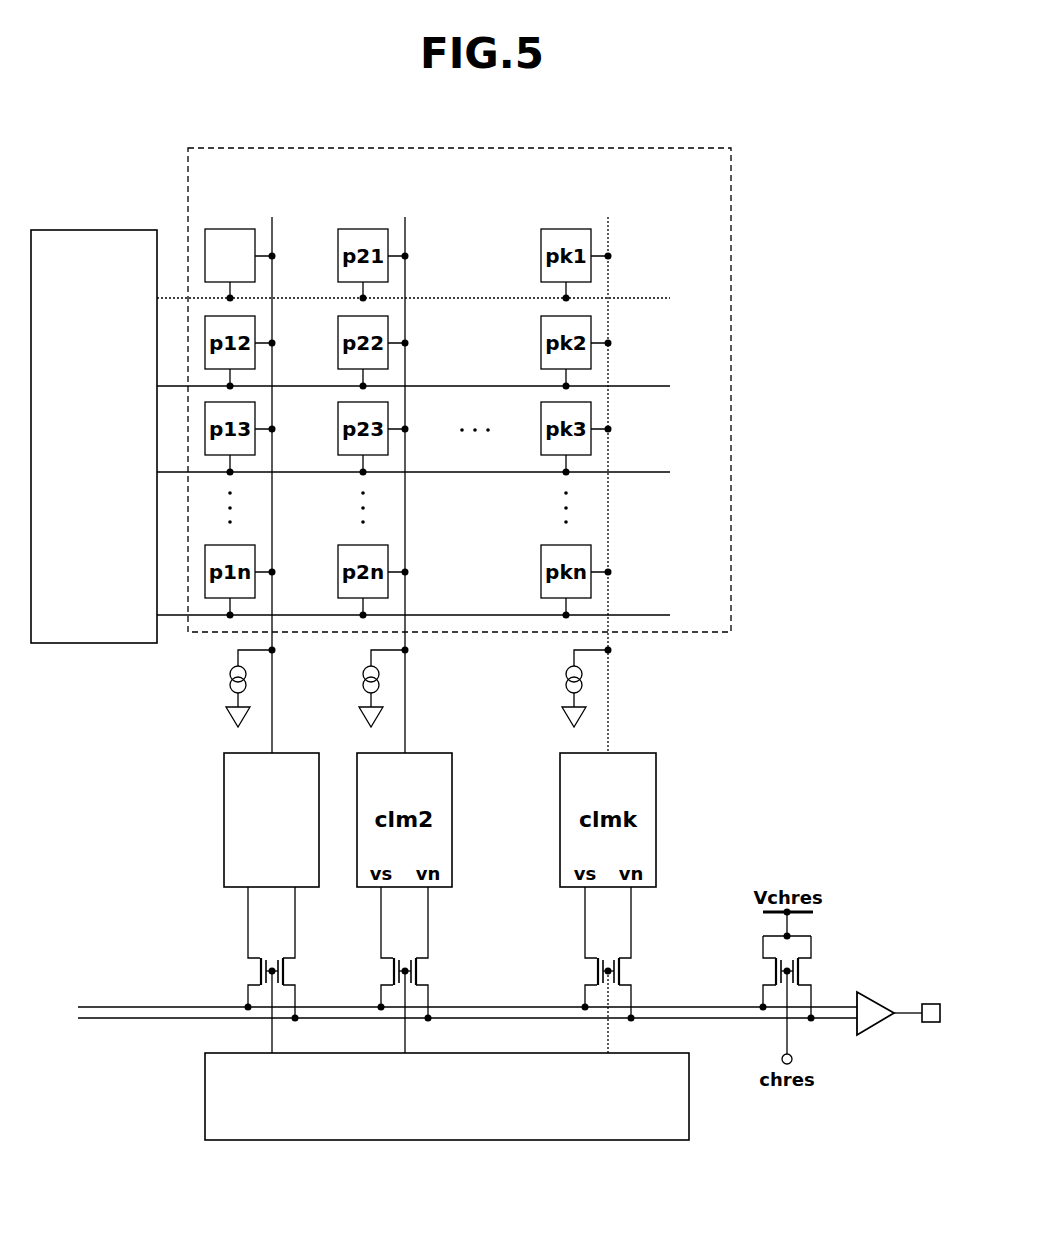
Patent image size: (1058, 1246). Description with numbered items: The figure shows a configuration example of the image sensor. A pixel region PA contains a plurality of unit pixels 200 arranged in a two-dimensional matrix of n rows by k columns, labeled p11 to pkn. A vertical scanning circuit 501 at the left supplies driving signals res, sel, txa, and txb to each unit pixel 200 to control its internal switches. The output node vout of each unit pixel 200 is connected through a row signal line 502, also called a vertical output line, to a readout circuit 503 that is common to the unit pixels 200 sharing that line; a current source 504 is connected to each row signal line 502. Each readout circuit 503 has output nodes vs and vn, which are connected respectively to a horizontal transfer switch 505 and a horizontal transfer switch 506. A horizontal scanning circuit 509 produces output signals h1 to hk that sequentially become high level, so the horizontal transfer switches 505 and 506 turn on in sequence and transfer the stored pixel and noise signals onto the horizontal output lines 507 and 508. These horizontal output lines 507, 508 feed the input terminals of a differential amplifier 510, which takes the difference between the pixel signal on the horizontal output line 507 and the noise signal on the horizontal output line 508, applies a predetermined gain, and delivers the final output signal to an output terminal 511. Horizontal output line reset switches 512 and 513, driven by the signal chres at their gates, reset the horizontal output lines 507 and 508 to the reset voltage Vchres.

The pixel region PA is at (648, 147).
The vertical scanning circuit 501 is at (106, 230).
The unit pixel 200 is at (221, 229).
The row signal line 502 is at (273, 227).
The readout circuit 503 is at (224, 797).
The current source 504 is at (228, 684).
The horizontal transfer switch 505 is at (258, 972).
The horizontal transfer switch 506 is at (288, 971).
The horizontal output line 507 is at (118, 1007).
The horizontal output line 508 is at (115, 1020).
The horizontal scanning circuit 509 is at (430, 1140).
The differential amplifier 510 is at (875, 994).
The output terminal 511 is at (931, 1023).
The horizontal output line reset switch 512 is at (763, 972).
The horizontal output line reset switch 513 is at (812, 971).